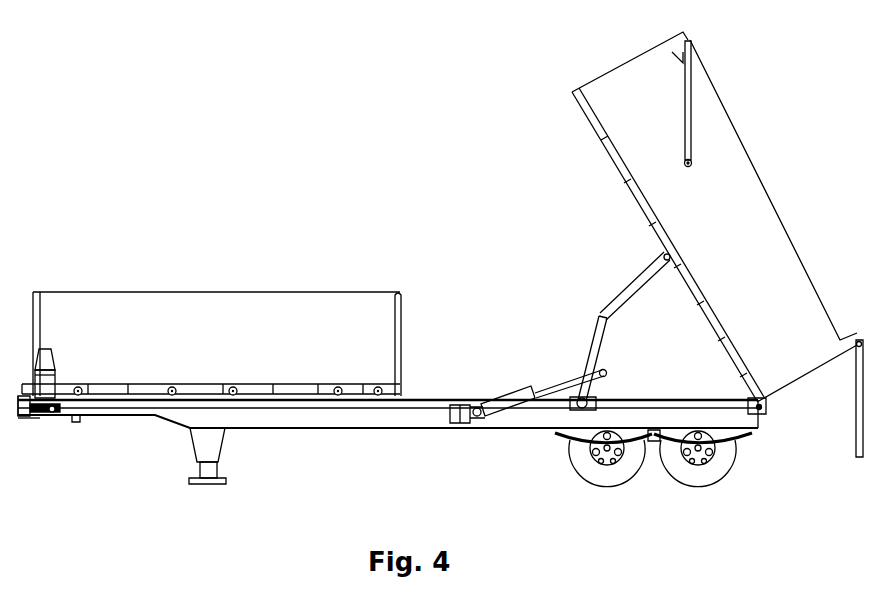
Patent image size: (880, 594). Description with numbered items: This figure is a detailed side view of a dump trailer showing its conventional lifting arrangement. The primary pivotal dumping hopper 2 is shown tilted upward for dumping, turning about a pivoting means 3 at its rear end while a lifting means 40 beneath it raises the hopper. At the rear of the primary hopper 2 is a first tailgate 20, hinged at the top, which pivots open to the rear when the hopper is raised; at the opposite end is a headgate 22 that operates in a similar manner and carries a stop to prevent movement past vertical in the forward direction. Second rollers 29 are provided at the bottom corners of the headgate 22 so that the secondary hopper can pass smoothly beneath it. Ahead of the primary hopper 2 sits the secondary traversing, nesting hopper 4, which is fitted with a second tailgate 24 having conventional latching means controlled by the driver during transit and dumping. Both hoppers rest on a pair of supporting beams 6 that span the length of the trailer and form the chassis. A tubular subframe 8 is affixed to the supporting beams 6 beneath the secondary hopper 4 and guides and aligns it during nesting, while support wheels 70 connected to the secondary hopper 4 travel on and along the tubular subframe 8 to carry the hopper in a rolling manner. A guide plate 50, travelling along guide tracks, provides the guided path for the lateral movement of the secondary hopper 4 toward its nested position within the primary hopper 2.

The primary pivotal dumping hopper 2 is at (763, 205).
The pivoting means 3 is at (762, 411).
The secondary traversing, nesting hopper 4 is at (181, 291).
The supporting beams 6 is at (411, 431).
The tubular subframe 8 is at (13, 398).
The first tailgate 20 is at (855, 409).
The headgate 22 is at (691, 96).
The second tailgate 24 is at (392, 349).
The second rollers 29 is at (692, 162).
The lifting means 40 is at (598, 318).
The guide plate 50 is at (53, 358).
The support wheels 70 is at (172, 382).